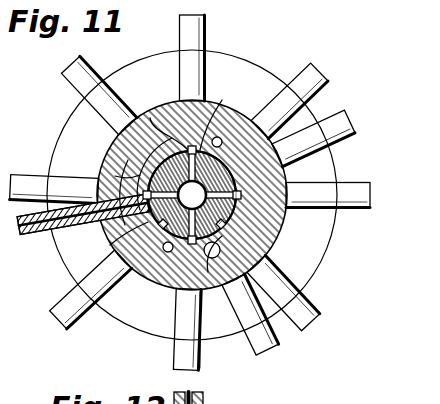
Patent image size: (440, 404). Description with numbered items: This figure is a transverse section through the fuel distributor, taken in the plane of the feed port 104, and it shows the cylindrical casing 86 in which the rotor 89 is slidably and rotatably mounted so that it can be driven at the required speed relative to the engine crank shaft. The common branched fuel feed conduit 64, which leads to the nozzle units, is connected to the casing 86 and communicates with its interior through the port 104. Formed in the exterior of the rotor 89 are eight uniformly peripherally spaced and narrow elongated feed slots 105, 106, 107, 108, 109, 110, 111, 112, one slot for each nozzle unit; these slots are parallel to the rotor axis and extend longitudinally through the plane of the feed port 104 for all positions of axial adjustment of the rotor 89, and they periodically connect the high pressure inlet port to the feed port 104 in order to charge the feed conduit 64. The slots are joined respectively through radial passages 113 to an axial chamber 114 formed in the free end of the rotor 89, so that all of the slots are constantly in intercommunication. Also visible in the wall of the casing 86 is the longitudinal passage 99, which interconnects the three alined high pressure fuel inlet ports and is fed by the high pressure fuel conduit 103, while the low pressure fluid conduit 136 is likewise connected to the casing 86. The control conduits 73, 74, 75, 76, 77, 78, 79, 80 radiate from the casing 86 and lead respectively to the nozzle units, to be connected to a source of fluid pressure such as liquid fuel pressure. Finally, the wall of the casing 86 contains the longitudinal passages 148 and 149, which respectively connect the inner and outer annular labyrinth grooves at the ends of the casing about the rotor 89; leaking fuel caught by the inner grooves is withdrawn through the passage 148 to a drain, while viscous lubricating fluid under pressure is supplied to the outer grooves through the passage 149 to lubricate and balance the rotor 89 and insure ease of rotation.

The fuel feed conduit 64 is at (55, 252).
The control conduit 73 is at (199, 314).
The control conduit 74 is at (68, 296).
The control conduit 75 is at (40, 183).
The control conduit 76 is at (80, 89).
The control conduit 77 is at (206, 28).
The control conduit 78 is at (325, 88).
The control conduit 79 is at (347, 189).
The control conduit 80 is at (288, 284).
The cylindrical casing 86 is at (272, 240).
The rotor 89 is at (150, 118).
The longitudinal passage 99 is at (201, 301).
The high pressure fuel conduit 103 is at (257, 333).
The port 104 is at (115, 176).
The feed slot 105 is at (113, 243).
The feed slot 106 is at (120, 158).
The feed slot 107 is at (124, 149).
The feed slot 108 is at (214, 108).
The feed slot 109 is at (218, 163).
The feed slot 110 is at (222, 193).
The feed slot 111 is at (221, 227).
The feed slot 112 is at (204, 256).
The radial passage 113 is at (230, 186).
The axial chamber 114 is at (223, 212).
The low pressure fluid conduit 136 is at (331, 116).
The longitudinal passage 148 is at (166, 253).
The longitudinal passage 149 is at (219, 137).